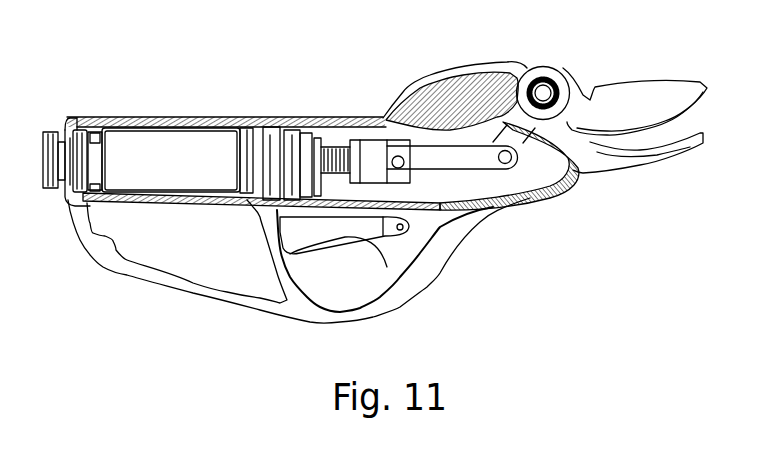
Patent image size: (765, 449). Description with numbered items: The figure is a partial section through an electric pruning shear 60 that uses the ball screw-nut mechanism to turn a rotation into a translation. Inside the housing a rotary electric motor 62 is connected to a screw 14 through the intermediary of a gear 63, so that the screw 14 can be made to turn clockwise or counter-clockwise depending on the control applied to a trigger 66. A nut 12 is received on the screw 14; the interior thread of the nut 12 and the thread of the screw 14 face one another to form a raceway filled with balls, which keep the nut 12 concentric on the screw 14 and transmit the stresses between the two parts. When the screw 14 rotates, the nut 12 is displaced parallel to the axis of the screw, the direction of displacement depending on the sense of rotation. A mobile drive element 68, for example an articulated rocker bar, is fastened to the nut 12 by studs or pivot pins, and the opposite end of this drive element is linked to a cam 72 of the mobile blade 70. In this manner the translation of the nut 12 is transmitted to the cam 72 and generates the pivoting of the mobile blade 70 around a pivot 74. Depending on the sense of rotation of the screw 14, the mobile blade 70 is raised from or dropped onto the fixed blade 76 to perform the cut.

The electric pruning shear 60 is at (213, 104).
The rotary electric motor 62 is at (153, 163).
The gear 63 is at (275, 167).
The screw 14 is at (338, 145).
The nut 12 is at (372, 160).
The mobile drive element 68 is at (460, 157).
The trigger 66 is at (330, 230).
The cam 72 is at (527, 142).
The pivot 74 is at (548, 92).
The mobile blade 70 is at (637, 99).
The fixed blade 76 is at (655, 153).